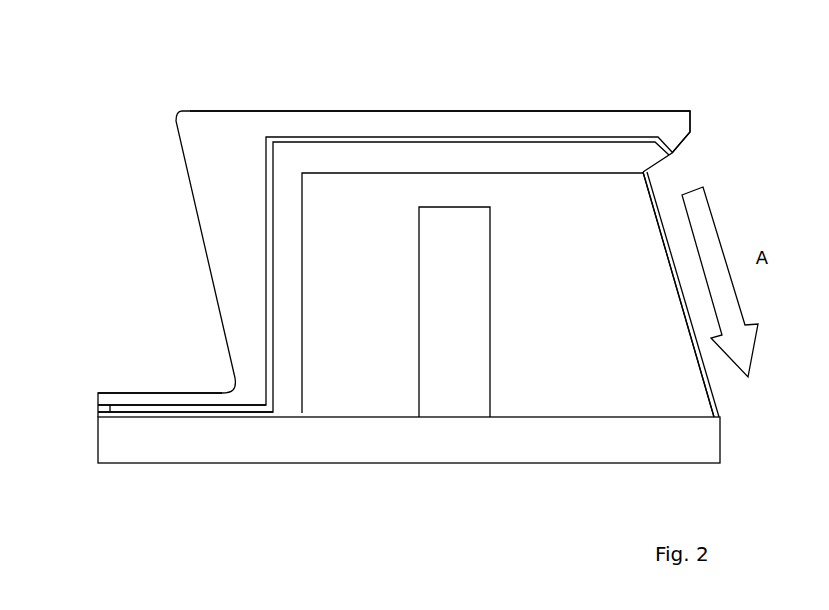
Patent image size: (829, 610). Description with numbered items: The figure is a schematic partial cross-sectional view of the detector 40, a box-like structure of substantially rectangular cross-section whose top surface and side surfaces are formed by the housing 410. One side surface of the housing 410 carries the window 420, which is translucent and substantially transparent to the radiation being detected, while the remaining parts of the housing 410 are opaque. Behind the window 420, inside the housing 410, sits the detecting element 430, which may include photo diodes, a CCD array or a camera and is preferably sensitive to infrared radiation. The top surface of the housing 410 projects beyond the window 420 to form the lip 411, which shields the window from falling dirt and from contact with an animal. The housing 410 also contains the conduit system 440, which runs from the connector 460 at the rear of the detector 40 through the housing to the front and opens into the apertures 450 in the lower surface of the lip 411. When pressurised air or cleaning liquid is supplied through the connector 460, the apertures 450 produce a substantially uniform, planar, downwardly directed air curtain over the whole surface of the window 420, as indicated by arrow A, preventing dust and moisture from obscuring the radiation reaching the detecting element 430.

The detector 40 is at (182, 111).
The housing 410 is at (538, 111).
The lip 411 is at (691, 118).
The window 420 is at (713, 395).
The detecting element 430 is at (490, 333).
The conduit system 440 is at (403, 137).
The apertures 450 is at (672, 153).
The connector 460 is at (97, 408).